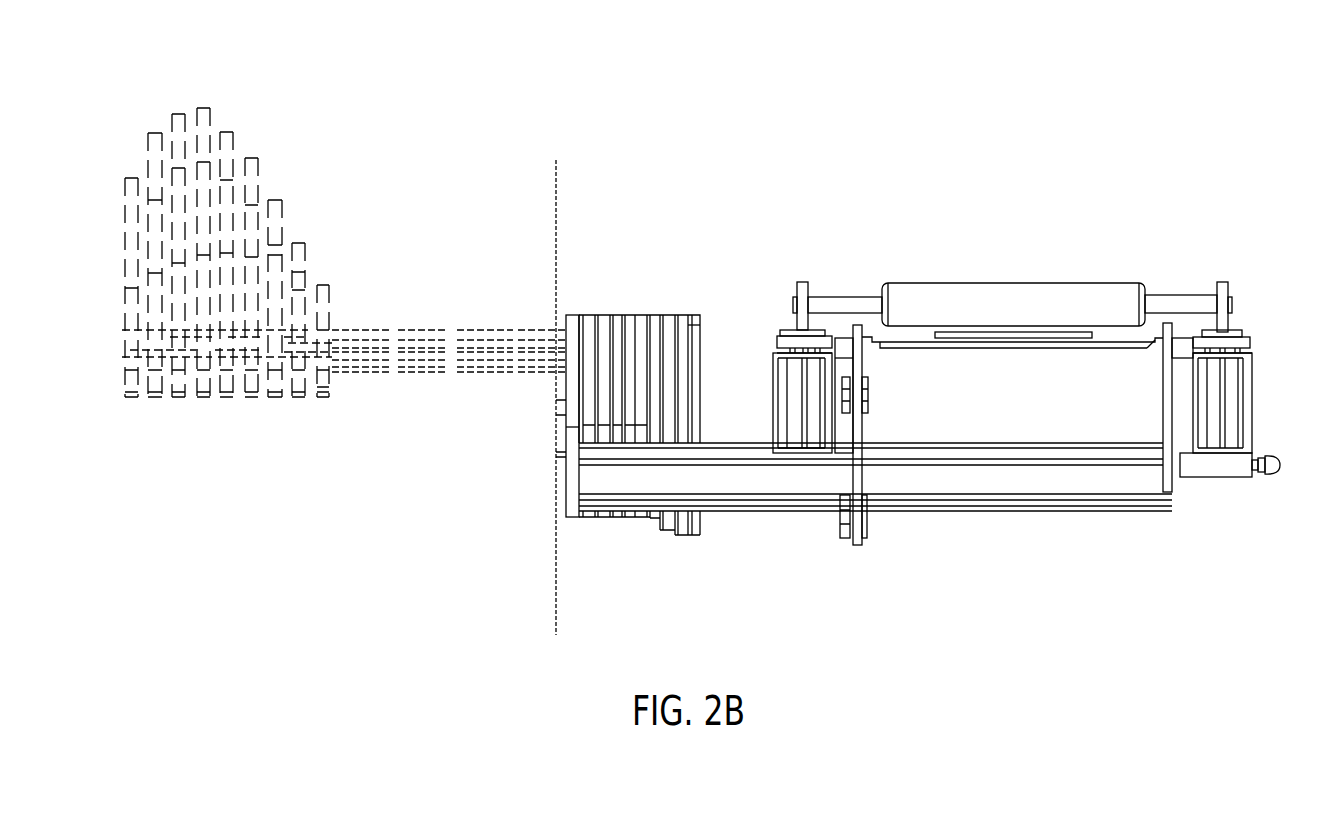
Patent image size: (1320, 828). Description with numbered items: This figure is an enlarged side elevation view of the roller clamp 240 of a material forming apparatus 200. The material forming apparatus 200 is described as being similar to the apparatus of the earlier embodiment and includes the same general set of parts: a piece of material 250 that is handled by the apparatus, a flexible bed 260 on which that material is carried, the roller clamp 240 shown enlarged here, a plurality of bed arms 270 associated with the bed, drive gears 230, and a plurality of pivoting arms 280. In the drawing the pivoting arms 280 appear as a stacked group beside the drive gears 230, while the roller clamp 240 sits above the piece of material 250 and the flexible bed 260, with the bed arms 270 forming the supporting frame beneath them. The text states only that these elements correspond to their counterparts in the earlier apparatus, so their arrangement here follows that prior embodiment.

The material forming apparatus 200 is at (602, 128).
The drive gears 230 is at (247, 288).
The roller clamp 240 is at (905, 303).
The piece of material 250 is at (993, 338).
The flexible bed 260 is at (1115, 345).
The plurality of bed arms 270 is at (1038, 480).
The plurality of pivoting arms 280 is at (617, 338).